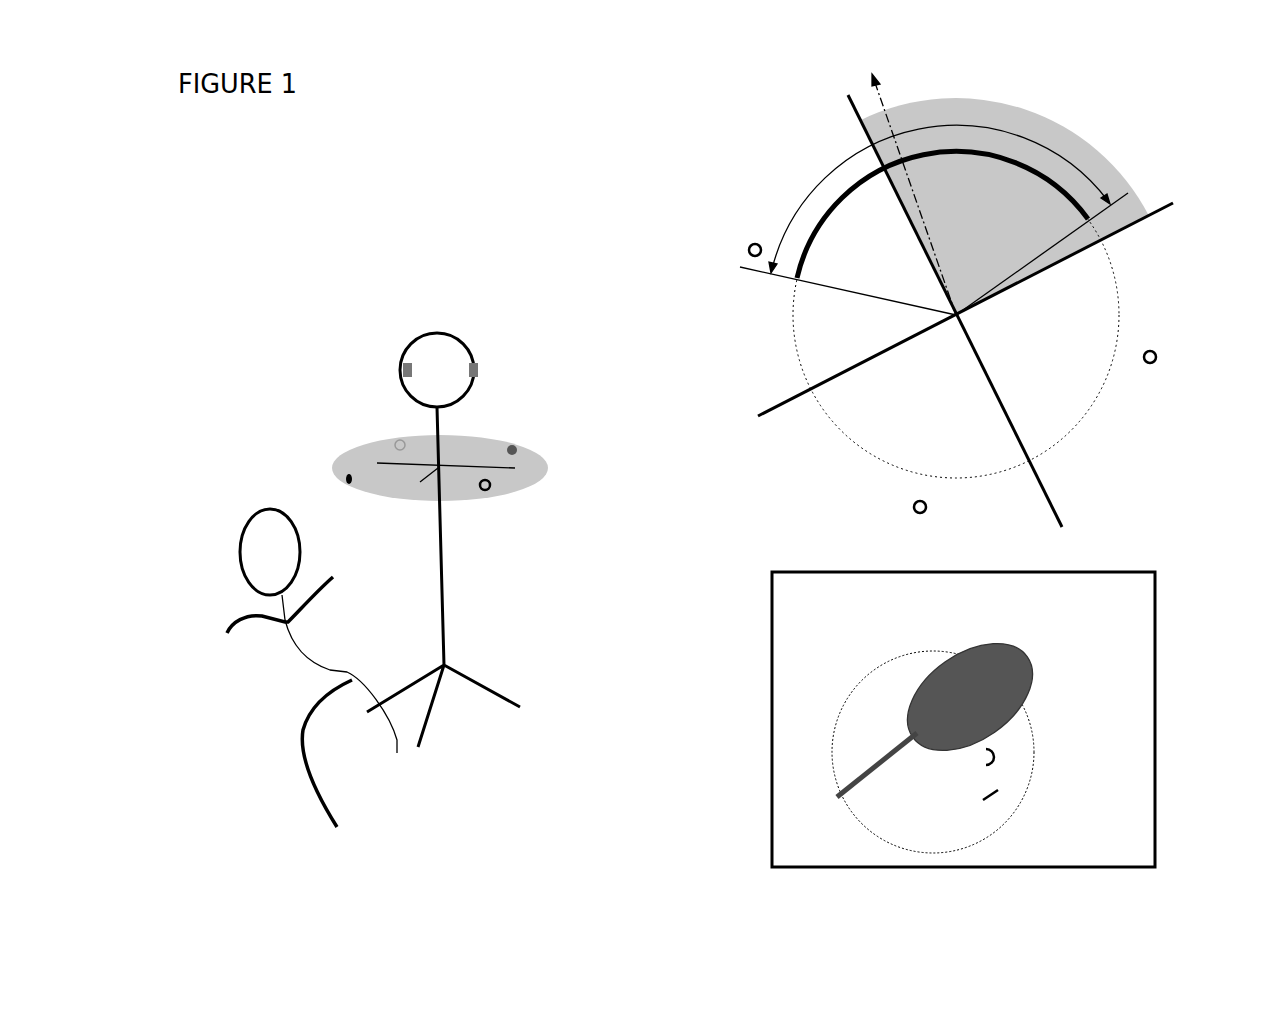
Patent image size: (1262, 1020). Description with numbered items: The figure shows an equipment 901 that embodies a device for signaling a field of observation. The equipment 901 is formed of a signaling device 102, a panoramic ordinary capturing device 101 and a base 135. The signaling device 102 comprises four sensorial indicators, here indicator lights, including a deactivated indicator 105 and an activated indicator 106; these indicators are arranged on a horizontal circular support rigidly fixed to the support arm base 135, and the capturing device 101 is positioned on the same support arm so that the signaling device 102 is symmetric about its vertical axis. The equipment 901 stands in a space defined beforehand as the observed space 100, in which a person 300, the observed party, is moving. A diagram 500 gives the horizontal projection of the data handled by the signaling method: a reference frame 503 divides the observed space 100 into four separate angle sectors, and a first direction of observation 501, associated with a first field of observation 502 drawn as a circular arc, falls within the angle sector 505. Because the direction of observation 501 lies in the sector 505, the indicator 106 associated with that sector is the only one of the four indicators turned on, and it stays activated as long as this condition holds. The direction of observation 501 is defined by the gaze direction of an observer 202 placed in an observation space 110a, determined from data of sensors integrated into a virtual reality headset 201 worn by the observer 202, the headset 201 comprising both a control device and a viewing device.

The observed space 100 is at (220, 292).
The capturing device 101 is at (471, 345).
The signaling device 102 is at (547, 455).
The indicator light 105 is at (490, 492).
The indicator light 106 is at (515, 442).
The base 135 is at (448, 600).
The person 300 is at (270, 507).
The equipment 901 is at (375, 408).
The diagram 500 is at (790, 147).
The direction of observation 501 is at (890, 125).
The field of observation 502 is at (1043, 166).
The reference frame 503 is at (1150, 218).
The angle sector 505 is at (1116, 175).
The observation space 110a is at (963, 719).
The virtual reality headset 201 is at (1043, 668).
The observer 202 is at (1035, 770).